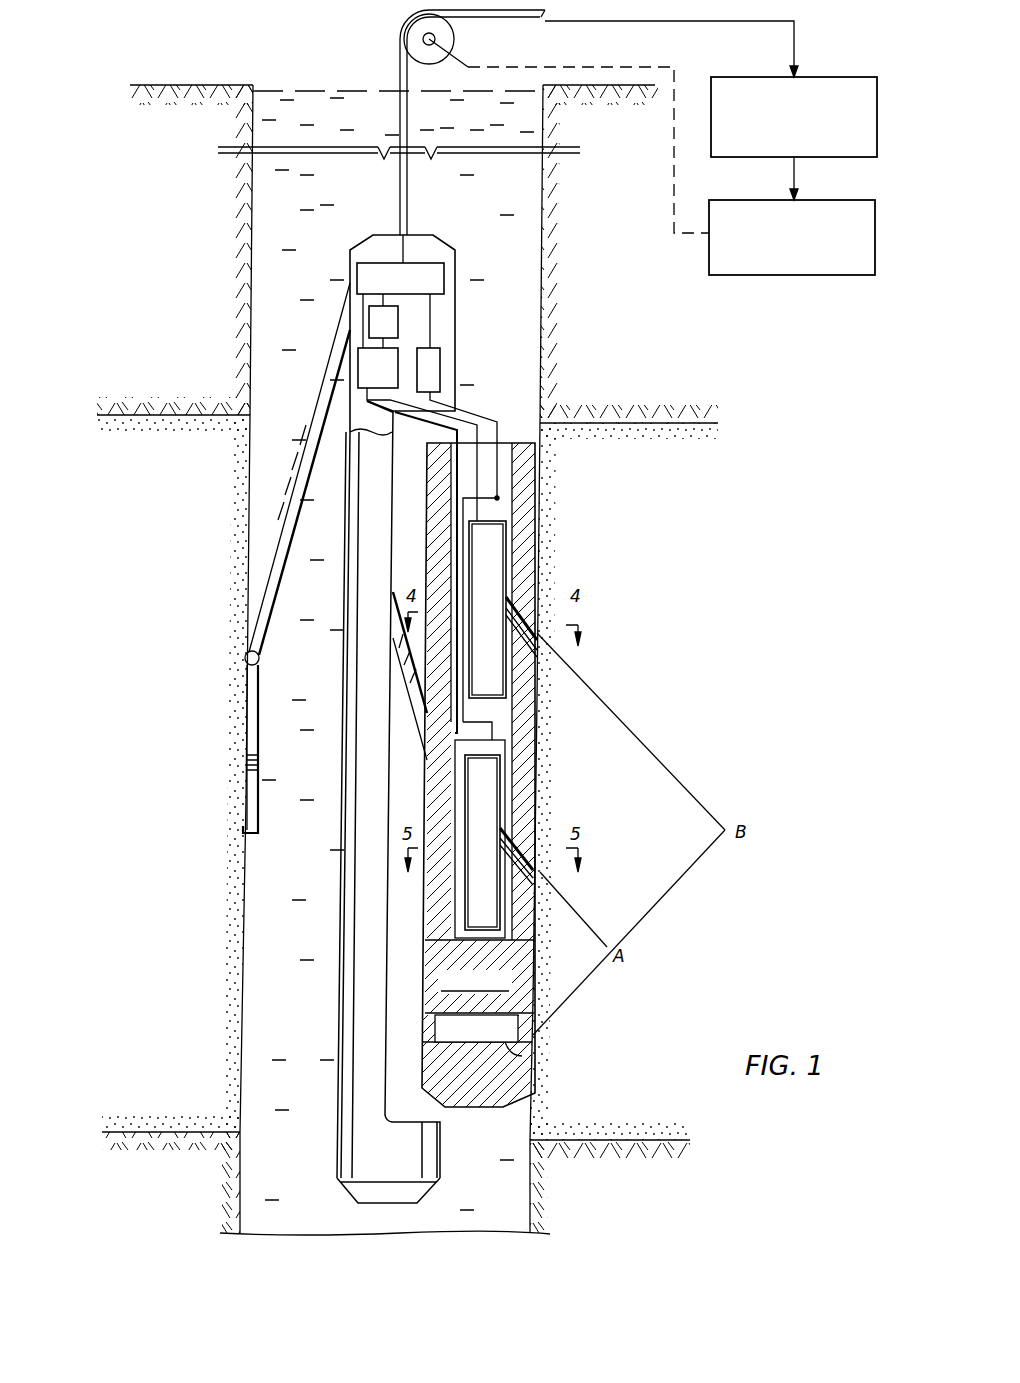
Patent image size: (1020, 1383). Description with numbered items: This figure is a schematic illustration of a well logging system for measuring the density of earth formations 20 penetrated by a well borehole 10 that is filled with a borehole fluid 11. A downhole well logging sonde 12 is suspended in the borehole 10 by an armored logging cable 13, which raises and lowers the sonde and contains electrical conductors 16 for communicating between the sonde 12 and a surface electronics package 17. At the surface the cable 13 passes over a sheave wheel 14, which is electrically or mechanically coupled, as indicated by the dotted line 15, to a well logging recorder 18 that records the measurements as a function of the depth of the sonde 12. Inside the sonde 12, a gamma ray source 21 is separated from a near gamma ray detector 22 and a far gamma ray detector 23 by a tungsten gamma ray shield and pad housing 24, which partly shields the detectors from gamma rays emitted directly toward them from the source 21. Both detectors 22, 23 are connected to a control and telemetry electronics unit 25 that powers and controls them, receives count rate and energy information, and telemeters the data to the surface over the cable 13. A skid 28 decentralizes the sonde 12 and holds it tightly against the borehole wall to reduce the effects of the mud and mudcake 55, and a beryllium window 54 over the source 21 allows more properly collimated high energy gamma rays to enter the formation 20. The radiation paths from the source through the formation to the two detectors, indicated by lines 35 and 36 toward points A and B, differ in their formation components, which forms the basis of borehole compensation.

The well borehole 10 is at (330, 65).
The borehole fluid 11 is at (312, 190).
The downhole well logging sonde 12 is at (350, 269).
The armored logging cable 13 is at (512, 18).
The sheave wheel 14 is at (412, 30).
The dotted line 15 is at (578, 66).
The electrical conductors 16 is at (655, 22).
The surface electronics package 17 is at (830, 77).
The well logging recorder 18 is at (840, 277).
The earth formations 20 is at (220, 482).
The gamma ray source 21 is at (543, 1058).
The near gamma ray detector 22 is at (500, 787).
The far gamma ray detector 23 is at (503, 547).
The tungsten gamma ray shield and pad housing 24 is at (425, 970).
The control and telemetry electronics unit 25 is at (442, 324).
The skid 28 is at (247, 745).
The near detector collimator axis 35 is at (577, 913).
The far detector collimator axis 36 is at (672, 774).
The beryllium window 54 is at (532, 1036).
The mud and mudcake 55 is at (549, 722).